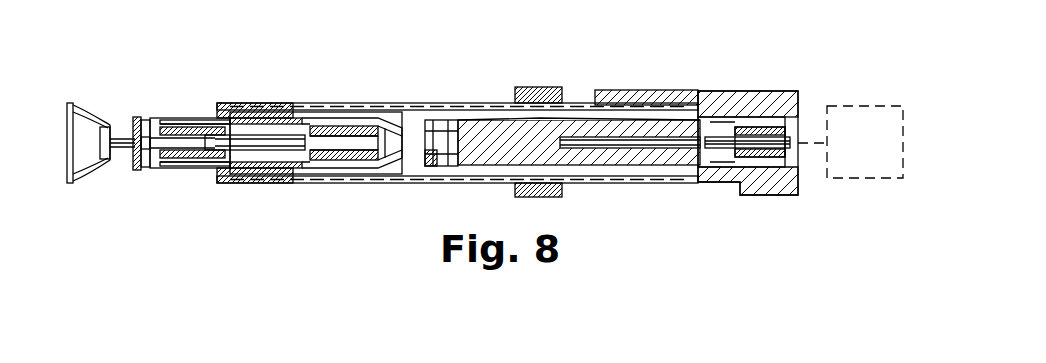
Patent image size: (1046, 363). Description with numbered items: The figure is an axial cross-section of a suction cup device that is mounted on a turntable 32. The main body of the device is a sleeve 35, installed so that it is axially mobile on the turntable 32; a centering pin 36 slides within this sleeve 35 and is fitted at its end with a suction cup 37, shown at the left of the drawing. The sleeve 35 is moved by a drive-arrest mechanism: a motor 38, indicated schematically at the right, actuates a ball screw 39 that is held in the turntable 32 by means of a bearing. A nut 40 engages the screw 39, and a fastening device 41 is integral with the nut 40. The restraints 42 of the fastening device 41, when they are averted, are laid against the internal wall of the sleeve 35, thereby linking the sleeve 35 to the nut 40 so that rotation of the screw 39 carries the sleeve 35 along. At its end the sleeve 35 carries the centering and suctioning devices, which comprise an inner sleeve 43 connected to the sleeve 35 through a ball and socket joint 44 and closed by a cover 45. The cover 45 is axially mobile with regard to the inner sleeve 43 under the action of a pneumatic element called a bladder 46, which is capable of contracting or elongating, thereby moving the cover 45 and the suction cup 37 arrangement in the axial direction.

The turntable 32 is at (773, 88).
The sleeve 35 is at (356, 102).
The centering pin 36 is at (131, 178).
The suction cup 37 is at (63, 129).
The motor 38 is at (865, 142).
The ball screw 39 is at (727, 133).
The nut 40 is at (657, 127).
The fastening device 41 is at (493, 137).
The restraints 42 is at (442, 128).
The sleeve 43 is at (310, 120).
The ball and socket joint 44 is at (250, 118).
The cover 45 is at (170, 118).
The bladder 46 is at (247, 150).